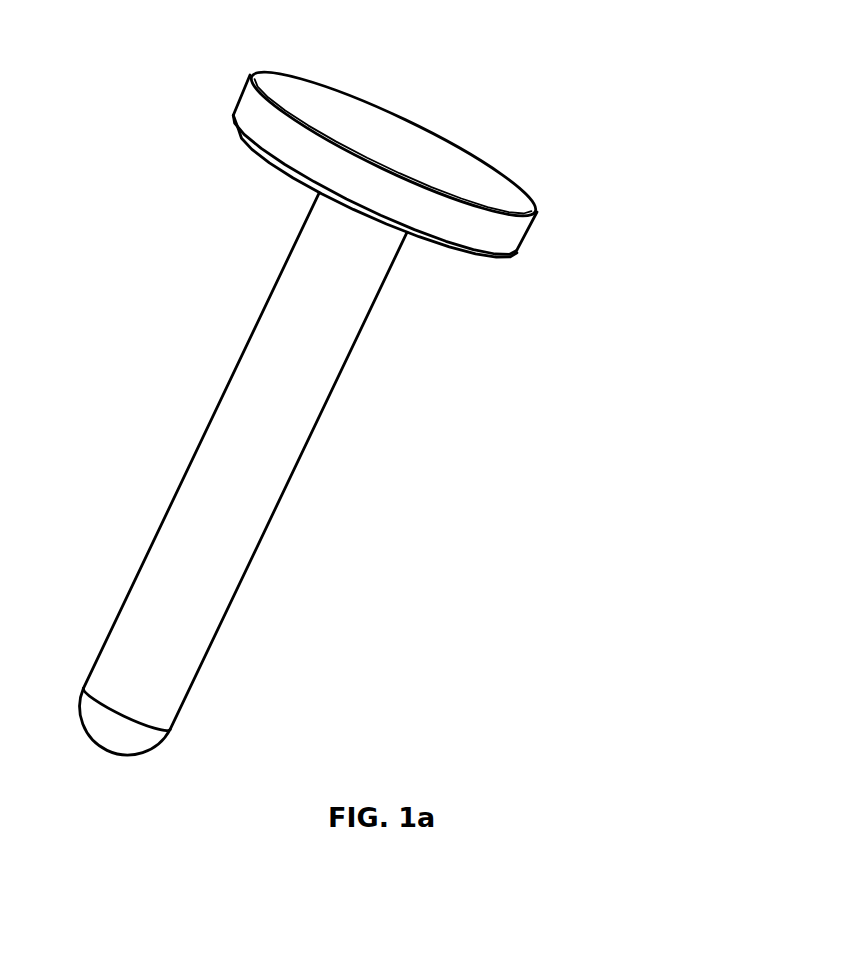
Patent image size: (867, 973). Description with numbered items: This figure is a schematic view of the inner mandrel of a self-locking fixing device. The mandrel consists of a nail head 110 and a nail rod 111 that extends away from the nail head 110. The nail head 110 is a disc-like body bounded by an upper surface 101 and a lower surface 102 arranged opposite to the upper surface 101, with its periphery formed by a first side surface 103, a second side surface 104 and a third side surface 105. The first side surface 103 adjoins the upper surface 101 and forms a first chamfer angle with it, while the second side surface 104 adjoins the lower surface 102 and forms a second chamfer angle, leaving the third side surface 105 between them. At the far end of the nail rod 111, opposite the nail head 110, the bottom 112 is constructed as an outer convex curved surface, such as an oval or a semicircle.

The nail head 110 is at (404, 214).
The upper surface 101 is at (348, 83).
The lower surface 102 is at (297, 183).
The first side surface 103 is at (537, 213).
The second side surface 104 is at (460, 250).
The third side surface 105 is at (497, 235).
The nail rod 111 is at (245, 472).
The bottom 112 is at (117, 738).